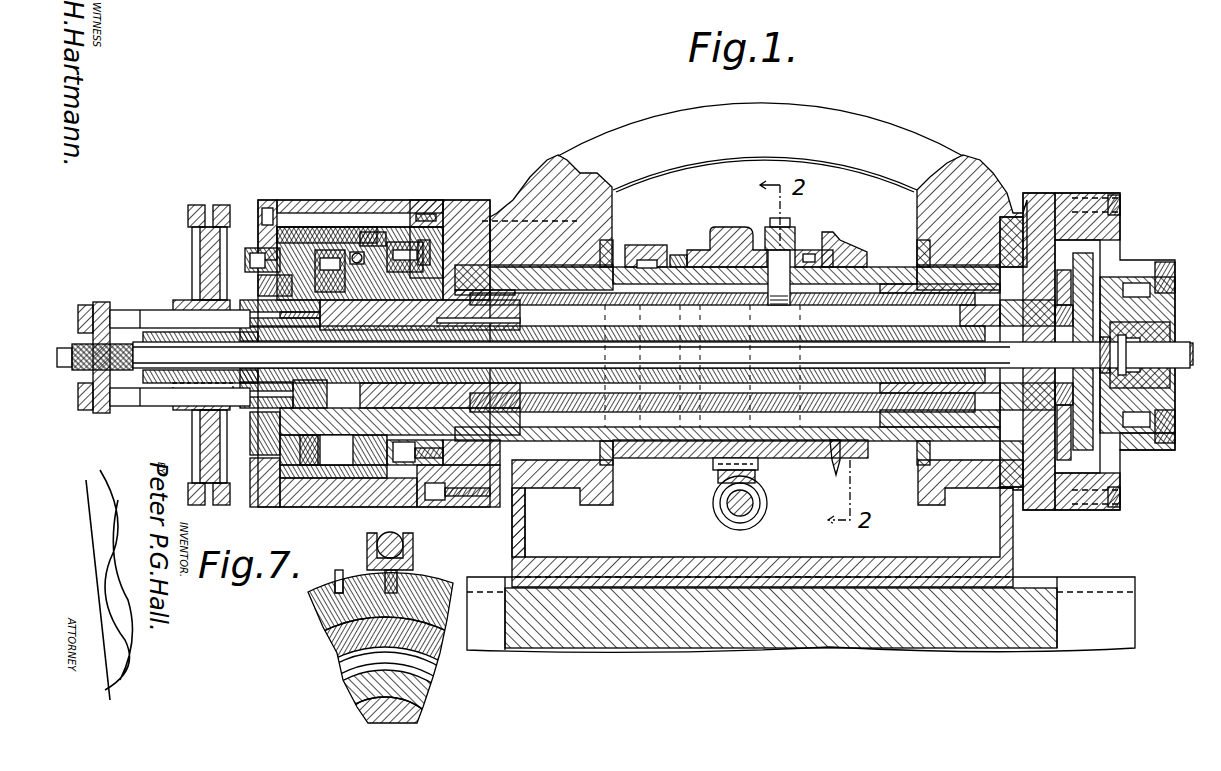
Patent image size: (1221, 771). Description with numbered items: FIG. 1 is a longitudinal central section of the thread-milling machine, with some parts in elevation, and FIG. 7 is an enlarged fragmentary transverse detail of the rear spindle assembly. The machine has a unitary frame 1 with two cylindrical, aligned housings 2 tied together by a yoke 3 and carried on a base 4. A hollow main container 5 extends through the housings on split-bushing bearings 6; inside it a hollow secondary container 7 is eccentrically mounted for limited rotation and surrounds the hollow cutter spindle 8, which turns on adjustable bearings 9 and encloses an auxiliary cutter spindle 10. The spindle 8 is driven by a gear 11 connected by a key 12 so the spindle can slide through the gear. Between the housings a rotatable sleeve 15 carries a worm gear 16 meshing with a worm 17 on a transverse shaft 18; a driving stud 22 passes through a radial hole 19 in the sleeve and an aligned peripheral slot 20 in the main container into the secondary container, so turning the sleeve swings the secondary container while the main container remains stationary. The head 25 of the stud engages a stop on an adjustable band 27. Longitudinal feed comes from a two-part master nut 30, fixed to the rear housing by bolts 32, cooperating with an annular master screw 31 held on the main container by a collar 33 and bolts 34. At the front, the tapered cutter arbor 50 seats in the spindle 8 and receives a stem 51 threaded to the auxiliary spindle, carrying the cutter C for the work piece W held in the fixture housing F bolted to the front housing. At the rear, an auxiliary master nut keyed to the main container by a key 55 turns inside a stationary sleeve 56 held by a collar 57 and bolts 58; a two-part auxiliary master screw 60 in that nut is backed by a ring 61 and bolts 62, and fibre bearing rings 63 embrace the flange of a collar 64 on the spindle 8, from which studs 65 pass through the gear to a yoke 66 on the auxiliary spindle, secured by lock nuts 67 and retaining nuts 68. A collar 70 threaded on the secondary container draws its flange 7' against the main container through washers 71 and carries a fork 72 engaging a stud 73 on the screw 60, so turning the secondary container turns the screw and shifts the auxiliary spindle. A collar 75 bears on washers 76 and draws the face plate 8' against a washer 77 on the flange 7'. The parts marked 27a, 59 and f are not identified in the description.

In FIG. 1, the unitary frame 1 is at (570, 520).
In FIG. 1, the housings 2 is at (600, 490).
In FIG. 1, the yoke 3 is at (760, 147).
In FIG. 1, the base 4 is at (801, 614).
In FIG. 1, the main container 5 is at (886, 254).
In FIG. 1, the bearings 6 is at (612, 250).
In FIG. 1, the secondary container 7 is at (664, 353).
In FIG. 7, the secondary container 7 is at (385, 670).
In FIG. 1, the cutter spindle 8 is at (612, 346).
In FIG. 7, the cutter spindle 8 is at (385, 720).
In FIG. 1, the bearings 9 is at (462, 312).
In FIG. 7, the bearings 9 is at (420, 670).
In FIG. 1, the auxiliary cutter spindle 10 is at (392, 363).
In FIG. 7, the auxiliary cutter spindle 10 is at (395, 715).
In FIG. 1, the gear 11 is at (220, 505).
In FIG. 1, the key 12 is at (250, 395).
In FIG. 1, the rotatable sleeve 15 is at (758, 464).
In FIG. 1, the worm gear 16 is at (755, 478).
In FIG. 1, the worm 17 is at (765, 497).
In FIG. 1, the shaft 18 is at (753, 503).
In FIG. 1, the hole 19 is at (735, 227).
In FIG. 1, the peripheral slot 20 is at (682, 285).
In FIG. 1, the driving stud 22 is at (795, 232).
In FIG. 1, the head 25 is at (810, 250).
In FIG. 1, the band 27 is at (838, 238).
In FIG. 1, the lever arm 27a is at (848, 458).
In FIG. 1, the master nut 30 is at (440, 227).
In FIG. 1, the annular master screw 31 is at (472, 215).
In FIG. 1, the bolts 32 is at (462, 507).
In FIG. 1, the collar 33 is at (420, 200).
In FIG. 1, the bolts 34 is at (370, 495).
In FIG. 1, the cutter arbor 50 is at (1069, 355).
In FIG. 1, the stem 51 is at (1027, 355).
In FIG. 1, the key 55 is at (398, 242).
In FIG. 1, the sleeve 56 is at (303, 200).
In FIG. 1, the collar 57 is at (268, 200).
In FIG. 1, the bolts 58 is at (350, 227).
In FIG. 1, the ring 59 is at (325, 250).
In FIG. 1, the auxiliary master screw 60 is at (333, 450).
In FIG. 1, the ring 61 is at (258, 452).
In FIG. 1, the bolts 62 is at (258, 250).
In FIG. 1, the bearing rings 63 is at (258, 284).
In FIG. 1, the collar 64 is at (275, 335).
In FIG. 1, the studs 65 is at (160, 310).
In FIG. 1, the yoke 66 is at (102, 302).
In FIG. 1, the lock nuts 67 is at (80, 344).
In FIG. 1, the retaining nuts 68 is at (85, 305).
In FIG. 1, the collar 70 is at (384, 452).
In FIG. 7, the collar 70 is at (339, 575).
In FIG. 1, the washers 71 is at (345, 480).
In FIG. 1, the fork 72 is at (380, 232).
In FIG. 7, the fork 72 is at (413, 553).
In FIG. 1, the stud 73 is at (356, 252).
In FIG. 7, the stud 73 is at (390, 532).
In FIG. 1, the collar 75 is at (262, 480).
In FIG. 1, the washers 76 is at (305, 338).
In FIG. 1, the washer 77 is at (1088, 253).
In FIG. 1, the work piece W is at (1178, 330).
In FIG. 1, the cutter C is at (1176, 372).
In FIG. 1, the housing F is at (1125, 488).
In FIG. 1, the screw f is at (1163, 262).
In FIG. 1, the peripheral flange 7' is at (1063, 294).
In FIG. 1, the face plate 8' is at (1076, 446).